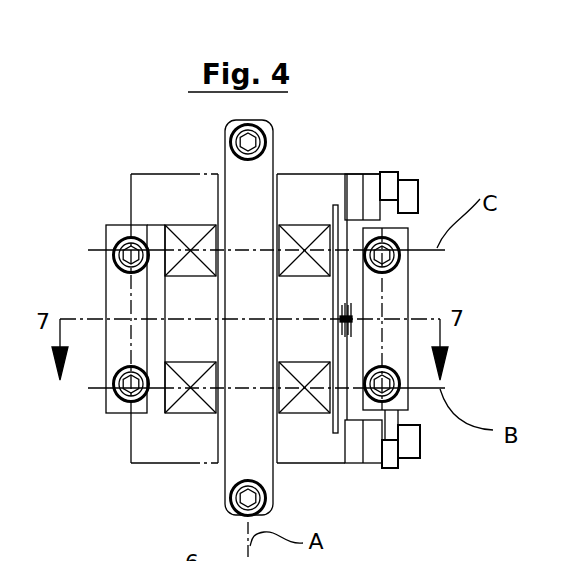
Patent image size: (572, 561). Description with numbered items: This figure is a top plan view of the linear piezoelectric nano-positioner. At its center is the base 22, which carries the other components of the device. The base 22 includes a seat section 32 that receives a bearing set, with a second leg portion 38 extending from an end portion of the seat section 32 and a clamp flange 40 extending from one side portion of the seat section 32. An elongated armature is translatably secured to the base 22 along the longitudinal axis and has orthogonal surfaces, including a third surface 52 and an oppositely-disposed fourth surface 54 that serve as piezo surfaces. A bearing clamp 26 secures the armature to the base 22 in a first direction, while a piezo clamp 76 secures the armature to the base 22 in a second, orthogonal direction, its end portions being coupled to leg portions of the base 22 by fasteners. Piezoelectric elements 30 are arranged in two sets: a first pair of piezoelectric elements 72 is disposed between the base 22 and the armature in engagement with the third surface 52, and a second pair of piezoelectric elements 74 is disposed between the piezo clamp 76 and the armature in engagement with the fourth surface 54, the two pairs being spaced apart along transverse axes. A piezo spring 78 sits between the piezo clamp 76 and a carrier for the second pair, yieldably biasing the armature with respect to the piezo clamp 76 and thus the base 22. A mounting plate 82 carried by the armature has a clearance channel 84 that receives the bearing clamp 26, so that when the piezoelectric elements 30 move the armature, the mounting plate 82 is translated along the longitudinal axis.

The base 22 is at (442, 319).
The bearing clamp 26 is at (316, 492).
The piezoelectric elements 30 is at (180, 387).
The seat section 32 is at (266, 339).
The second leg portion 38 is at (292, 298).
The clamp flange 40 is at (99, 319).
The third surface 52 is at (217, 332).
The fourth surface 54 is at (350, 338).
The first pair of piezoelectric elements 72 is at (153, 209).
The second pair of piezoelectric elements 74 is at (335, 199).
The piezo clamp 76 is at (424, 447).
The piezo spring 78 is at (440, 283).
The mounting plate 82 is at (174, 145).
The clearance channel 84 is at (323, 283).